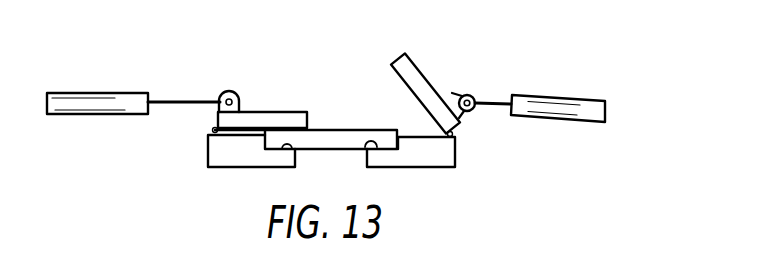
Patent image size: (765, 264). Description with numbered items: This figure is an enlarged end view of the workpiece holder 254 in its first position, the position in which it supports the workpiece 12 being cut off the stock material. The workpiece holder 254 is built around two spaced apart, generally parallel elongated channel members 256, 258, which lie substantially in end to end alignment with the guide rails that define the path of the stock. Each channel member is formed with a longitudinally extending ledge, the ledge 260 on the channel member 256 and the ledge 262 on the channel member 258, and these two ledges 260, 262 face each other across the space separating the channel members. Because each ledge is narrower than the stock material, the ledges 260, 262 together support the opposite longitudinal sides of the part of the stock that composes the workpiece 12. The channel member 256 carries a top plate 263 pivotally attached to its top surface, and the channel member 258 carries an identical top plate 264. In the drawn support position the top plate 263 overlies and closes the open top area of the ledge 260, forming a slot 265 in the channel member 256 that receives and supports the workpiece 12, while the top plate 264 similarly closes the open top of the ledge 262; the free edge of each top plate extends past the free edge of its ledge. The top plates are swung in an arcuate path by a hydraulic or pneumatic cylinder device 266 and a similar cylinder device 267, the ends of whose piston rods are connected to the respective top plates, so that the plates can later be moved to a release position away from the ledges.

The workpiece 12 is at (347, 142).
The workpiece holder 254 is at (502, 43).
The channel member 256 is at (220, 153).
The channel member 258 is at (437, 155).
The ledge 260 is at (292, 149).
The ledge 262 is at (365, 147).
The top plate 263 is at (270, 102).
The top plate 264 is at (408, 72).
The slot 265 is at (307, 140).
The hydraulic or pneumatic cylinder device 266 is at (117, 92).
The hydraulic or pneumatic cylinder device 267 is at (565, 98).